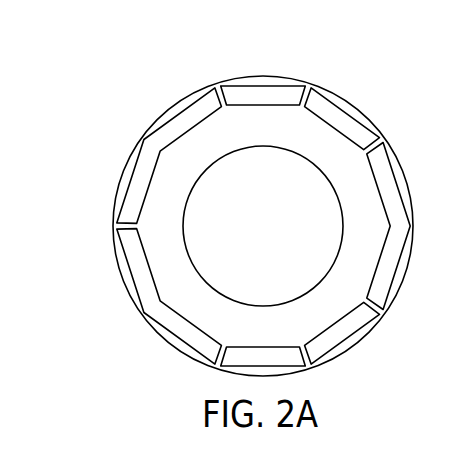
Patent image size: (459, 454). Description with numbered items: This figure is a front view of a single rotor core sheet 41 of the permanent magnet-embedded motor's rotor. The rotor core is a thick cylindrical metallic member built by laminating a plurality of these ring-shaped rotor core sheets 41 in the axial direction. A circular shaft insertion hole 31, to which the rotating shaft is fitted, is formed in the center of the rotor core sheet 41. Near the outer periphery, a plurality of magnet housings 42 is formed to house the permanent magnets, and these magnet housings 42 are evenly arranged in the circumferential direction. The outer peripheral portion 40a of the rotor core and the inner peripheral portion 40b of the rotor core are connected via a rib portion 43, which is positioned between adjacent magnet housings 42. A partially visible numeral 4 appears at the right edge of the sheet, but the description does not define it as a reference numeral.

The rotor core sheet 41 is at (140, 62).
The magnet housing 42 is at (335, 102).
The rib portion 43 is at (113, 243).
The outer peripheral portion of the rotor core 40a is at (121, 264).
The inner peripheral portion of the rotor core 40b is at (160, 212).
The shaft insertion hole 31 is at (341, 256).
The rotor 4 is at (452, 242).